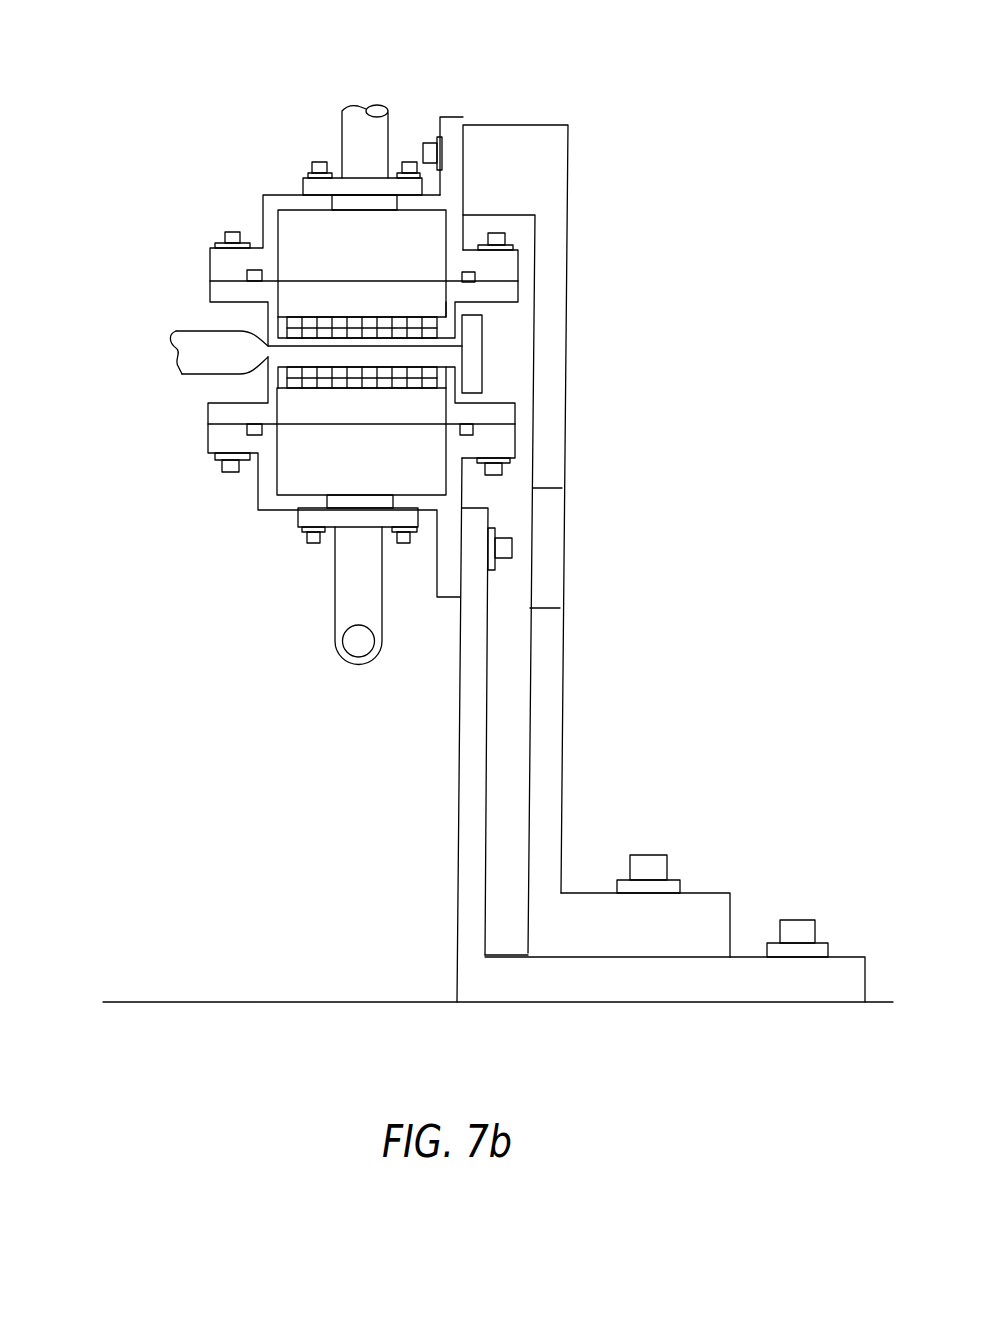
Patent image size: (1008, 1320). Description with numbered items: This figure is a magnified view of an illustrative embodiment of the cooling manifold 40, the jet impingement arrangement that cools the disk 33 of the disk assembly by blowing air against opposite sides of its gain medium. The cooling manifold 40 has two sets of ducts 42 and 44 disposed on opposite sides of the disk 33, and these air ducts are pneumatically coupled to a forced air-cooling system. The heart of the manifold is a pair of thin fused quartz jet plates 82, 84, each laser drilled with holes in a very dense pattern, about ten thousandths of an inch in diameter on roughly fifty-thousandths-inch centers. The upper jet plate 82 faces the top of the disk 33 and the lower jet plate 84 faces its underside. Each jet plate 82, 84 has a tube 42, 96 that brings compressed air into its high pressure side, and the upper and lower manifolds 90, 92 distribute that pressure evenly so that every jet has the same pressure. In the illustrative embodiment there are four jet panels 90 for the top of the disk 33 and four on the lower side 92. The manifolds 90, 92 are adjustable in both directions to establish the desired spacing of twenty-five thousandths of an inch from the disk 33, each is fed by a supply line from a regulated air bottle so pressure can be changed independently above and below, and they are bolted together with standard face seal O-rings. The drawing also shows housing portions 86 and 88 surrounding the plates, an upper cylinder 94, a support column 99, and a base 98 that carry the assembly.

The disk 33 is at (198, 350).
The cooling manifold 40 is at (104, 238).
The duct 42 is at (428, 68).
The duct 44 is at (100, 465).
The jet plate 82 is at (280, 323).
The jet plate 84 is at (280, 370).
The upper die housing 86 is at (502, 290).
The lower die housing 88 is at (493, 412).
The jet panel 90 is at (273, 207).
The jet panel 92 is at (268, 502).
The upper actuator cylinder 94 is at (353, 133).
The tube 96 is at (357, 640).
The base 98 is at (468, 922).
The support column 99 is at (547, 758).